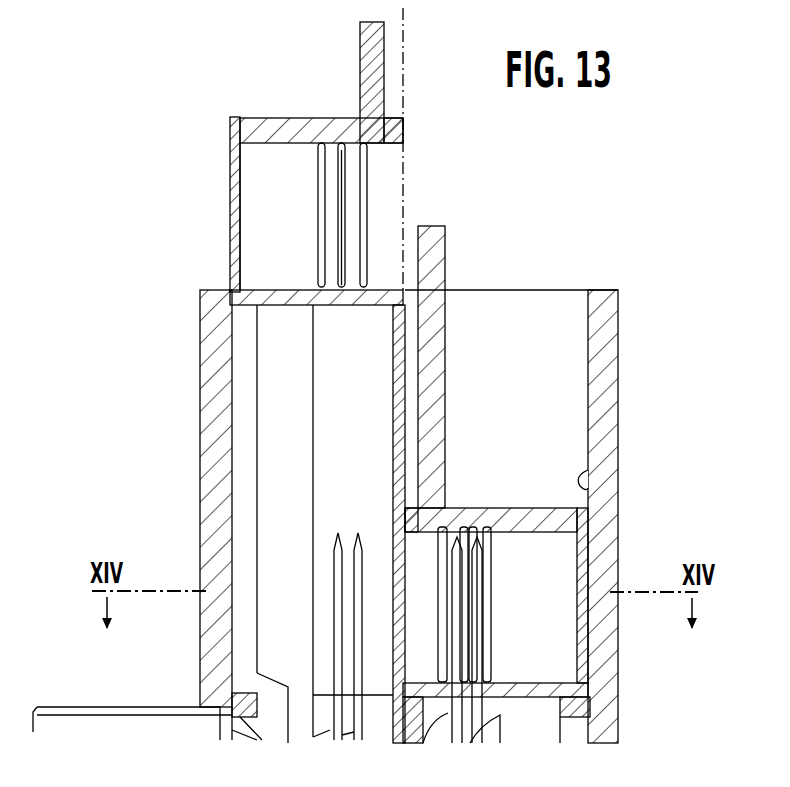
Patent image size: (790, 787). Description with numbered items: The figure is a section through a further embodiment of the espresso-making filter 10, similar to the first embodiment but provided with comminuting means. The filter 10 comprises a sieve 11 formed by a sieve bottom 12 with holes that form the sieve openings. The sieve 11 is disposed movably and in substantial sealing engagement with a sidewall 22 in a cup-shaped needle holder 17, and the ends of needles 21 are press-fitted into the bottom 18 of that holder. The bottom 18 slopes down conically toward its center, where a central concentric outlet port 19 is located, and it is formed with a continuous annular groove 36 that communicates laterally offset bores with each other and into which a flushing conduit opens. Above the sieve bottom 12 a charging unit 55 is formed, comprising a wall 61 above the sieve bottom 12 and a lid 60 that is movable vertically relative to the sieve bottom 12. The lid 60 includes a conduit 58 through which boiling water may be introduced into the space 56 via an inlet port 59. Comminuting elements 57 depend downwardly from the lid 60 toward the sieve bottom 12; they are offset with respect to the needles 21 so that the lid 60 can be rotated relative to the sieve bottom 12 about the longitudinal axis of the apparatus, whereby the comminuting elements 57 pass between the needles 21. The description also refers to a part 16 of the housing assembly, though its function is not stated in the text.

The espresso-making filter 10 is at (182, 519).
The sieve 11 is at (502, 644).
The sieve bottom 12 is at (233, 265).
The housing 16 is at (592, 280).
The cup-shaped needle holder 17 is at (605, 372).
The bottom 18 is at (583, 665).
The central concentric outlet port 19 is at (503, 685).
The needles 21 is at (478, 572).
The sidewall 22 is at (582, 478).
The continuous annular groove 36 is at (573, 737).
The charging unit 55 is at (256, 98).
The space 56 is at (258, 177).
The comminuting elements 57 is at (343, 217).
The conduit 58 is at (372, 35).
The inlet port 59 is at (385, 118).
The lid 60 is at (297, 130).
The wall 61 is at (230, 137).